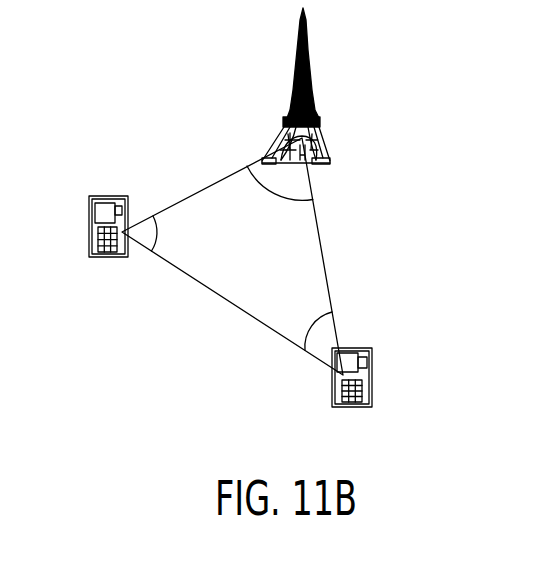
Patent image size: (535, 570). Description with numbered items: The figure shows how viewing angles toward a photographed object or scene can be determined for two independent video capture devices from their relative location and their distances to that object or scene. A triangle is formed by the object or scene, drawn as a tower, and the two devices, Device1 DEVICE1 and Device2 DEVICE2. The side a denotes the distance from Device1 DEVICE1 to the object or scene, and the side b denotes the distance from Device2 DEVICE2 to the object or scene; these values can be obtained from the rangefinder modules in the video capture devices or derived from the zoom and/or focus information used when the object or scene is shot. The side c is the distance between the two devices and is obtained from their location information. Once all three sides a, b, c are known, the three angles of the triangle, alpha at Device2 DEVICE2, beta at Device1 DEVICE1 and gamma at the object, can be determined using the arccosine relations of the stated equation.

The distance from Device1 to the object or scene photographed a is at (200, 191).
The distance from Device2 to the object or scene photographed b is at (325, 262).
The distance between the two devices c is at (232, 305).
The Device1 DEVICE1 is at (108, 246).
The Device2 DEVICE2 is at (353, 398).